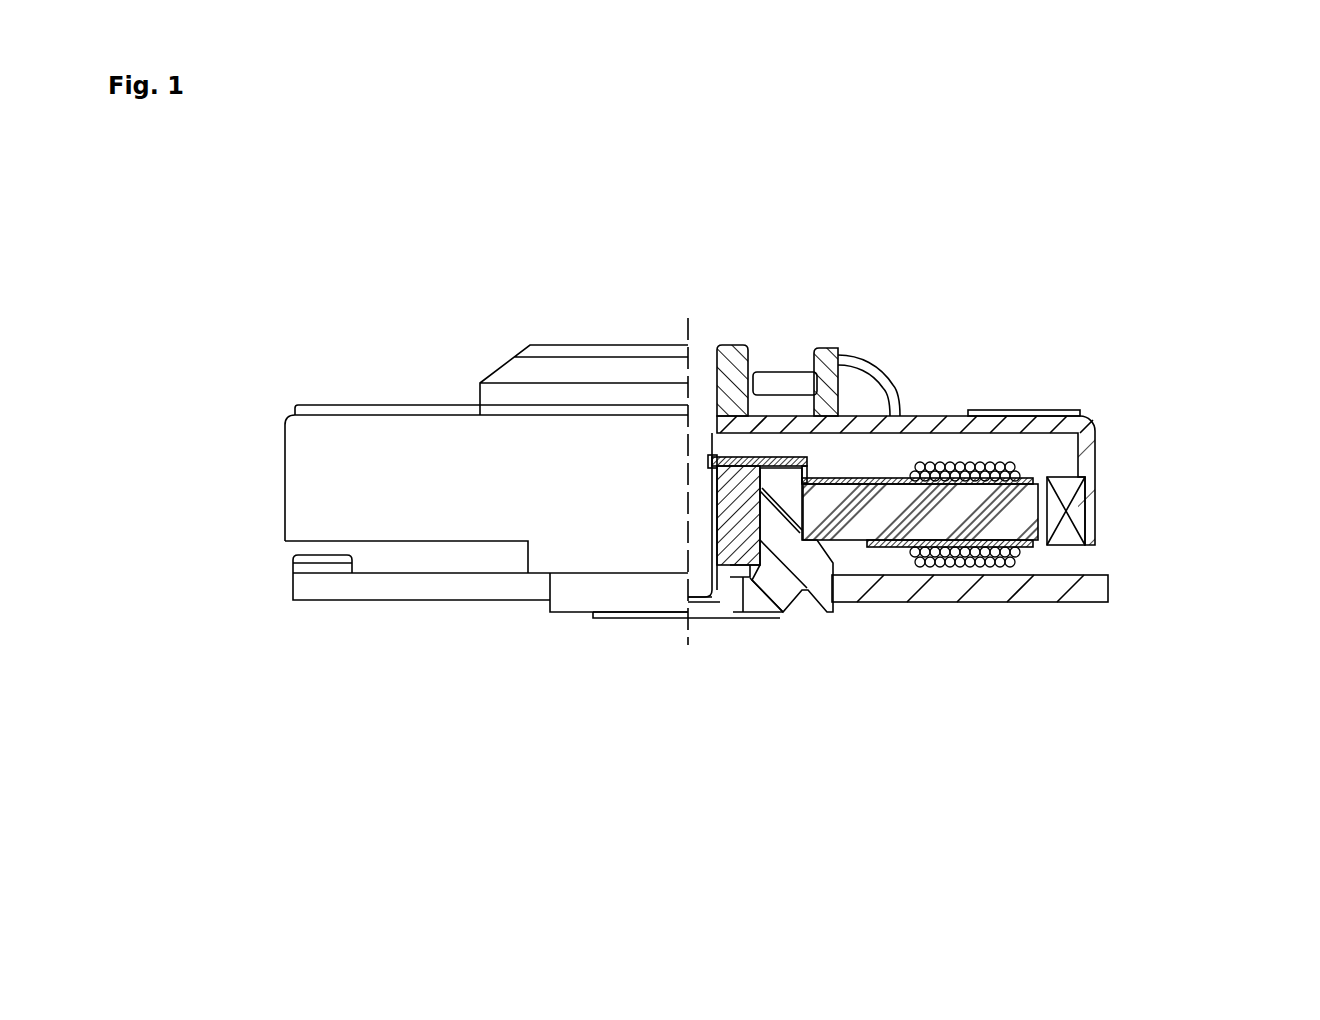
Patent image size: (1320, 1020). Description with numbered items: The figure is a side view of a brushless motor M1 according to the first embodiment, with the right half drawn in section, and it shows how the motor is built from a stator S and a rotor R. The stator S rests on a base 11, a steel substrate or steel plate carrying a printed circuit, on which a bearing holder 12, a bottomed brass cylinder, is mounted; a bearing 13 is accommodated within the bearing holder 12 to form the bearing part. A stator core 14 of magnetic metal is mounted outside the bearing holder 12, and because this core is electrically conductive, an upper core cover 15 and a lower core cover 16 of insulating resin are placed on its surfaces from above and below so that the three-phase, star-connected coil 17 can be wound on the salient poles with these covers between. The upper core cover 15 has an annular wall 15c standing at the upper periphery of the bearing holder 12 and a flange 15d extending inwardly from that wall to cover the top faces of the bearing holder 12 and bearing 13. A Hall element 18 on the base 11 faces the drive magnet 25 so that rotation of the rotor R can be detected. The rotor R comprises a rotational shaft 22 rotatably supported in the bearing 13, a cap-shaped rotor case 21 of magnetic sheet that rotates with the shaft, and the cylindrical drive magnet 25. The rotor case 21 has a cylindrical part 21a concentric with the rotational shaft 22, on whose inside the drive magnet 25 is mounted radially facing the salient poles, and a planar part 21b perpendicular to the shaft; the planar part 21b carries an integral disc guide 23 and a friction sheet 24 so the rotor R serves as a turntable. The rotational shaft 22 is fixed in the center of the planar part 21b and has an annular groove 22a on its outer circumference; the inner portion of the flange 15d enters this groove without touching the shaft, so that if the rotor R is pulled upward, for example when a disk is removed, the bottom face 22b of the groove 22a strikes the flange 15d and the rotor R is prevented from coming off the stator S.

The brushless motor M1 is at (466, 413).
The rotor R is at (1004, 374).
The stator S is at (1027, 507).
The base 11 is at (1077, 595).
The bearing holder 12 is at (790, 595).
The bearing 13 is at (740, 567).
The stator core 14 is at (930, 512).
The upper core cover 15 is at (895, 477).
The annular wall 15c is at (815, 458).
The flange 15d is at (762, 457).
The lower core cover 16 is at (903, 548).
The coil 17 is at (1005, 548).
The Hall element 18 is at (293, 558).
The rotor case 21 is at (1100, 445).
The cylindrical part 21a is at (1095, 478).
The planar part 21b is at (942, 416).
The rotational shaft 22 is at (703, 367).
The annular groove 22a is at (758, 418).
The bottom face of the groove 22b is at (712, 458).
The disc guide 23 is at (542, 345).
The friction sheet 24 is at (1048, 410).
The drive magnet 25 is at (1073, 512).